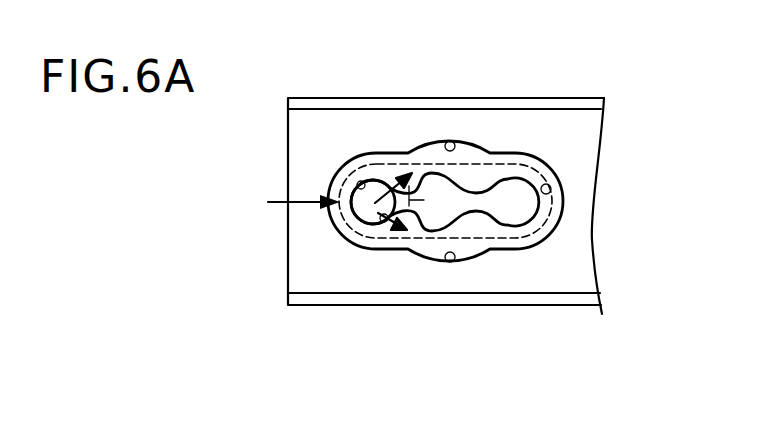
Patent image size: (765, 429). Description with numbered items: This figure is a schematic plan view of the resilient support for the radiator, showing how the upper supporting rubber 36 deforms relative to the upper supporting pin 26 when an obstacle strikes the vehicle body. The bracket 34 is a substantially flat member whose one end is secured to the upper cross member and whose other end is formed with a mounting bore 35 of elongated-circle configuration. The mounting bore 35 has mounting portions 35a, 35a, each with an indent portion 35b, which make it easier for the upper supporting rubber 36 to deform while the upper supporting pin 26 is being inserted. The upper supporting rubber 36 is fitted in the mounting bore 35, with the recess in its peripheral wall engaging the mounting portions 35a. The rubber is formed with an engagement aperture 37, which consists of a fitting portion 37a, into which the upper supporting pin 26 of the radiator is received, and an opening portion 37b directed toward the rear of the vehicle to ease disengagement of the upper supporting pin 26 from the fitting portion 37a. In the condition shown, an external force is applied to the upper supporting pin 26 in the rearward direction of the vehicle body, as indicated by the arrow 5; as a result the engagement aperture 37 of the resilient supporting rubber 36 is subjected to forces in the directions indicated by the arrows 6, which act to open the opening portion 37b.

The upper supporting pin 26 is at (347, 230).
The bracket 34 is at (540, 306).
The mounting bore 35 is at (444, 242).
The mounting portion 35a is at (346, 176).
The indent portion 35b is at (452, 142).
The upper supporting rubber 36 is at (547, 245).
The engagement aperture 37 is at (445, 186).
The fitting portion 37a is at (377, 184).
The opening portion 37b is at (405, 190).
The arrow ⑤ 5 is at (307, 220).
The arrows ⑥ 6 is at (377, 182).